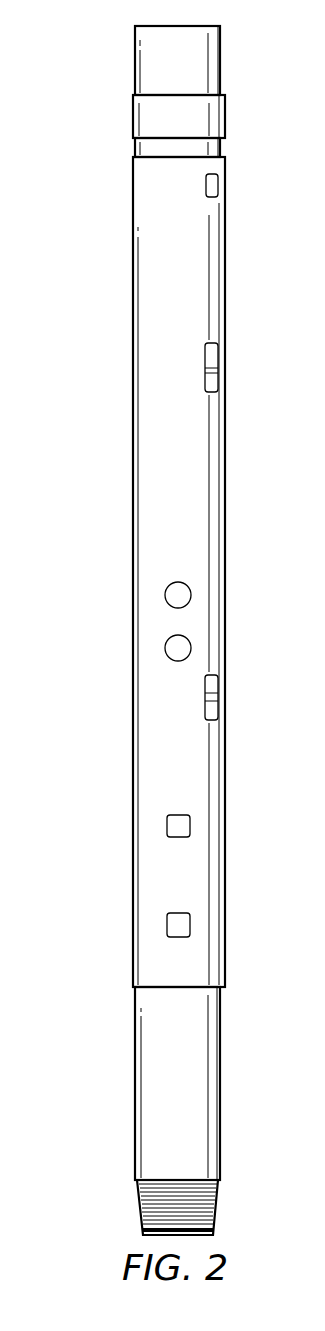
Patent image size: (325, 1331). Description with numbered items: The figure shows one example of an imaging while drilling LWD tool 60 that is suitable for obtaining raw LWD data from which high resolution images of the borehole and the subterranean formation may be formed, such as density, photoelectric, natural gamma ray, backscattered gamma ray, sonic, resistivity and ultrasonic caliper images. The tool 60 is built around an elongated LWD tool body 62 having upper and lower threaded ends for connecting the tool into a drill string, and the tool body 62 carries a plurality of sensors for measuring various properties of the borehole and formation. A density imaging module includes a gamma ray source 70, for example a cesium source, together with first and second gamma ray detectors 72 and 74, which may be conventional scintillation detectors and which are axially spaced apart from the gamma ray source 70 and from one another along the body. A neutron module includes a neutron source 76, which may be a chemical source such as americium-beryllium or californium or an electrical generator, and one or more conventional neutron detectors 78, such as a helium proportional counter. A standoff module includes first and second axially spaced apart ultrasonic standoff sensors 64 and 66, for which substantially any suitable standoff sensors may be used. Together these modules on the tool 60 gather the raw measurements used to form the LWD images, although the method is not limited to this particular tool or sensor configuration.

The LWD tool 60 is at (88, 229).
The LWD tool body 62 is at (132, 420).
The ultrasonic standoff sensor 64 is at (177, 660).
The ultrasonic standoff sensor 66 is at (178, 590).
The gamma ray source 70 is at (213, 698).
The first gamma ray detector 72 is at (182, 823).
The second gamma ray detector 74 is at (182, 923).
The neutron source 76 is at (210, 366).
The neutron detector 78 is at (207, 185).